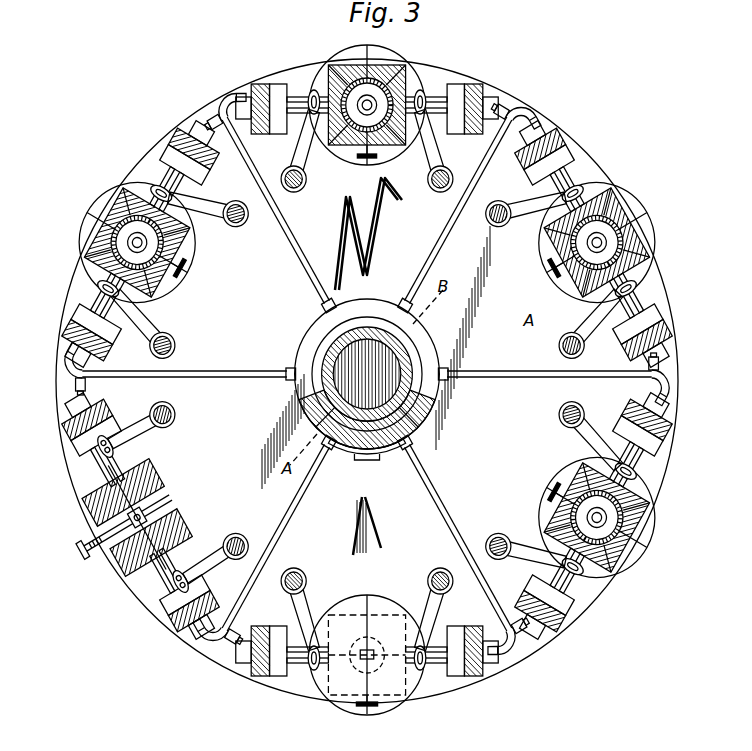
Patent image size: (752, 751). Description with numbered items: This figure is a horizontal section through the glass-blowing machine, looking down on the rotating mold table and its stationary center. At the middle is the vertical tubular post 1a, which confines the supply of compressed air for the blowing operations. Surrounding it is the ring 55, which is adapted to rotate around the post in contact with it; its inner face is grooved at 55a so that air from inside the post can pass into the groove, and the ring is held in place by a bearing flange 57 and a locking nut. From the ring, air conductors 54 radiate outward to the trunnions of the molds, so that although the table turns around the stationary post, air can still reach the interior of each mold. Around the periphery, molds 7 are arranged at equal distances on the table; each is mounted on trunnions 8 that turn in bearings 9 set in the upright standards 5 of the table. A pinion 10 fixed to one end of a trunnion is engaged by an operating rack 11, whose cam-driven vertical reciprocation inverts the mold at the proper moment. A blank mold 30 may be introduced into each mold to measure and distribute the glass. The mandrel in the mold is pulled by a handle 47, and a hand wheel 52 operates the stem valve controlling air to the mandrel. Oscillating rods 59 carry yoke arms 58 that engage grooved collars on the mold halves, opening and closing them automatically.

The vertical tubular post 1a is at (400, 348).
The upright standards 5 is at (556, 150).
The molds 7 is at (100, 200).
The trunnions 8 is at (285, 190).
The bearings 9 is at (200, 171).
The pinion 10 is at (212, 122).
The operating rack 11 is at (497, 133).
The blank mold 30 is at (167, 253).
The handle 47 is at (376, 638).
The hand wheel 52 is at (85, 534).
The air conductors 54 is at (473, 371).
The ring 55 is at (338, 440).
The groove 55a is at (416, 414).
The bearing flange 57 is at (378, 462).
The yoke arms 58 is at (135, 437).
The oscillating rods 59 is at (168, 412).